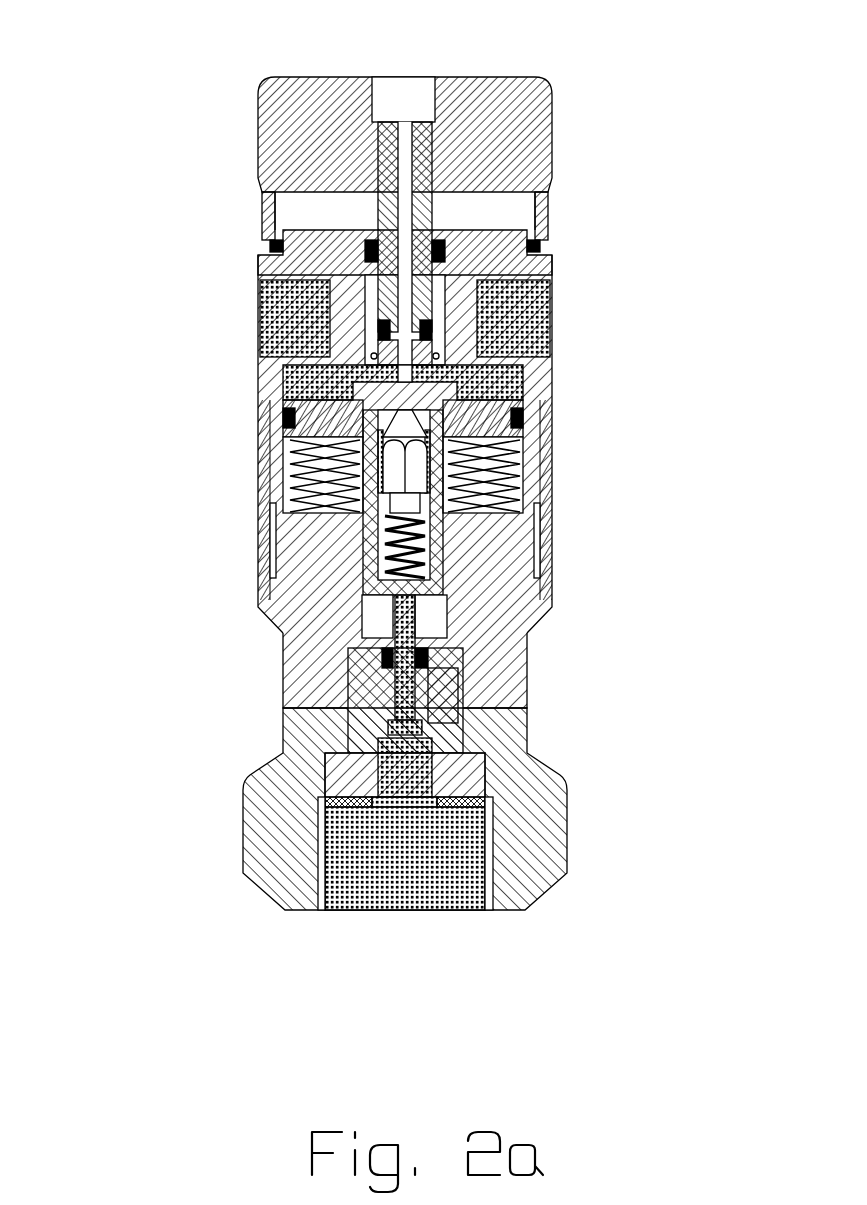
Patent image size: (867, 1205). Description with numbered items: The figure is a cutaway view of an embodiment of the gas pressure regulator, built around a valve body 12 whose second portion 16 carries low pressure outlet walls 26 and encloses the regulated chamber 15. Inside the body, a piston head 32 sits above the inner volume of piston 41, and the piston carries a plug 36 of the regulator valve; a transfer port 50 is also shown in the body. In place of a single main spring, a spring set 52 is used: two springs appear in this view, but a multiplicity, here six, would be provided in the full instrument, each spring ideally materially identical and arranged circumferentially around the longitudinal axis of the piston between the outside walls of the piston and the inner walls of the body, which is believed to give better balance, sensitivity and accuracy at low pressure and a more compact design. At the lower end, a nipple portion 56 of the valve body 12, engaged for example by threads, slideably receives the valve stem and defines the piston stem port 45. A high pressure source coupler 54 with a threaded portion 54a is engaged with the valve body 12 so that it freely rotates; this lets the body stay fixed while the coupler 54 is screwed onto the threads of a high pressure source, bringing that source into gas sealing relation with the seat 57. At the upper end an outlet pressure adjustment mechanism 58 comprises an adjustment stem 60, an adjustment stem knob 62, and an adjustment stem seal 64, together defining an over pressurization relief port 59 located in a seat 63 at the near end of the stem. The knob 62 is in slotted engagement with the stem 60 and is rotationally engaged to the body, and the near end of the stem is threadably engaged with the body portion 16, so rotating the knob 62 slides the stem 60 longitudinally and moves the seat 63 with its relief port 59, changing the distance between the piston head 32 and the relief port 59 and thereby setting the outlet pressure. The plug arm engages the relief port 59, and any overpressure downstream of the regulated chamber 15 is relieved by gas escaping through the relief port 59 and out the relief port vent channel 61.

The body 12 is at (567, 620).
The regulated chamber 15 is at (317, 380).
The second portion of body 16 is at (540, 387).
The low pressure outlet walls of second portion 26 is at (513, 316).
The piston head 32 is at (548, 457).
The plug 36 is at (395, 462).
The inner volume of piston 41 is at (413, 555).
The piston stem port 45 is at (408, 677).
The transfer port 50 is at (537, 405).
The spring set 52 is at (540, 508).
The coupler 54 is at (522, 812).
The threaded portion 54a is at (485, 877).
The nipple portion 56 is at (443, 740).
The seat 57 is at (352, 802).
The outlet pressure adjustment mechanism 58 is at (540, 258).
The over pressurization relief port 59 is at (440, 338).
The adjustment stem 60 is at (545, 173).
The relief port vent channel 61 is at (402, 192).
The adjustment stem knob 62 is at (508, 118).
The seat 63 is at (383, 338).
The adjustment stem seal 64 is at (280, 237).